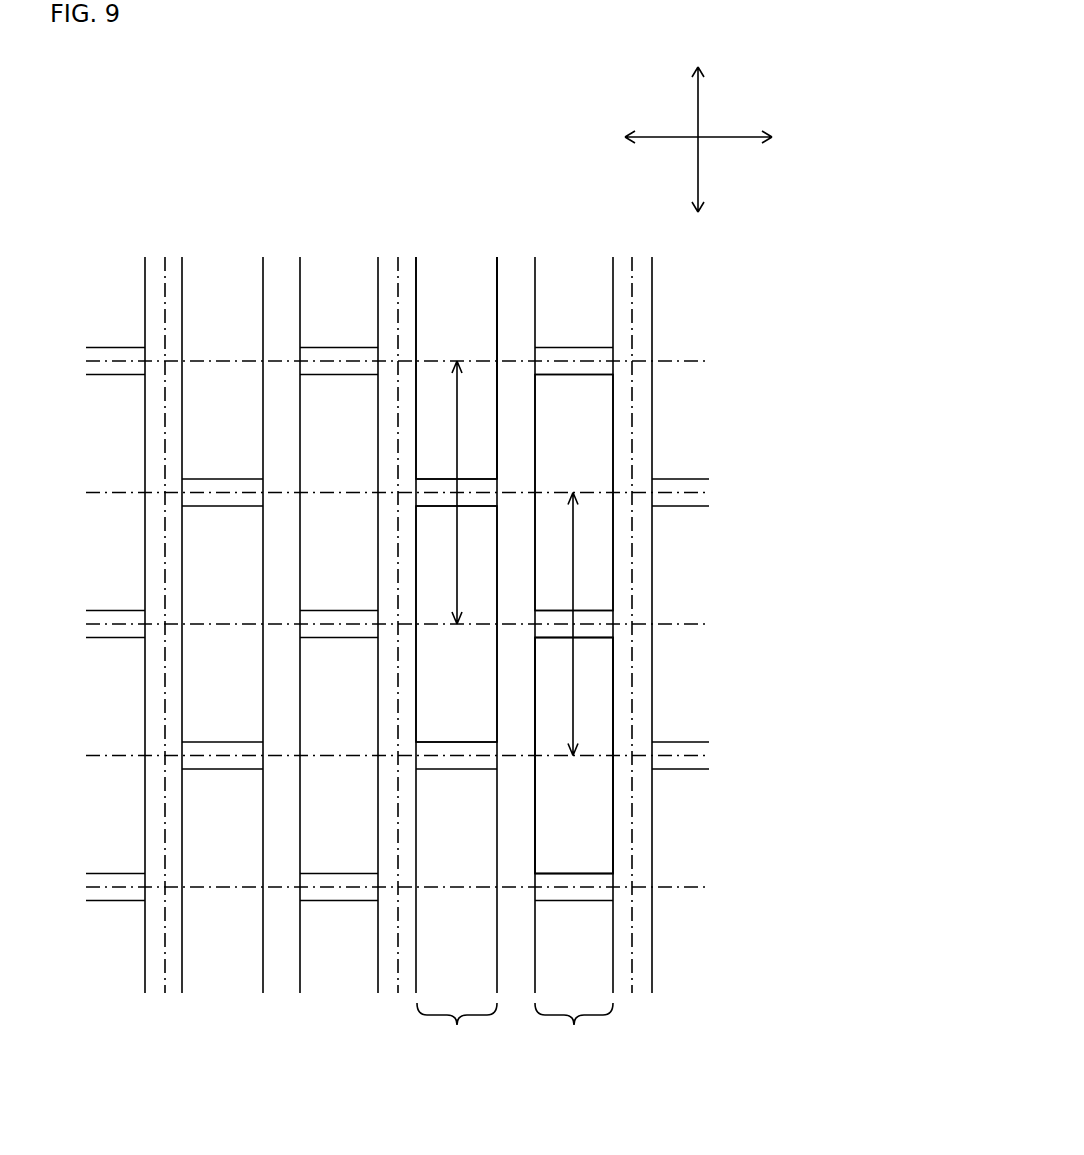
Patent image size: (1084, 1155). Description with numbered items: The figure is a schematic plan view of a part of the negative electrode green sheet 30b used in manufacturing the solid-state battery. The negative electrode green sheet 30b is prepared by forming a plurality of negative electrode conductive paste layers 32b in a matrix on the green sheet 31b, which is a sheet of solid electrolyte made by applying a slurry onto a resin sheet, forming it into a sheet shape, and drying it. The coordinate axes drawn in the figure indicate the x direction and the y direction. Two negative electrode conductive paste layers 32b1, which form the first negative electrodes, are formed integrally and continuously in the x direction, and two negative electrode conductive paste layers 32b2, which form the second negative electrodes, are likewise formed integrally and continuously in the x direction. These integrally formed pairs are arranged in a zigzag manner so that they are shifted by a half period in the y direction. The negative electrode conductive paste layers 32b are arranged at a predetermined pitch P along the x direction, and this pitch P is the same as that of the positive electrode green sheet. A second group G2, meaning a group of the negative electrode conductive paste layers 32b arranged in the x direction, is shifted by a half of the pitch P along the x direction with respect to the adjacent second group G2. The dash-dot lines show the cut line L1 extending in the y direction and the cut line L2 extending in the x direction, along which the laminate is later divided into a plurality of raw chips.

The negative electrode green sheet 30b is at (288, 225).
The green sheet 31b is at (512, 280).
The negative electrode conductive paste layer 32b is at (615, 648).
The negative electrode conductive paste layer 32b1 is at (497, 398).
The negative electrode conductive paste layer 32b2 is at (614, 524).
The pitch P is at (457, 447).
The second group G2 is at (515, 1032).
The cut line L1 is at (687, 887).
The cut line L2 is at (647, 938).
The x-axis direction x is at (699, 163).
The y-axis direction y is at (747, 135).